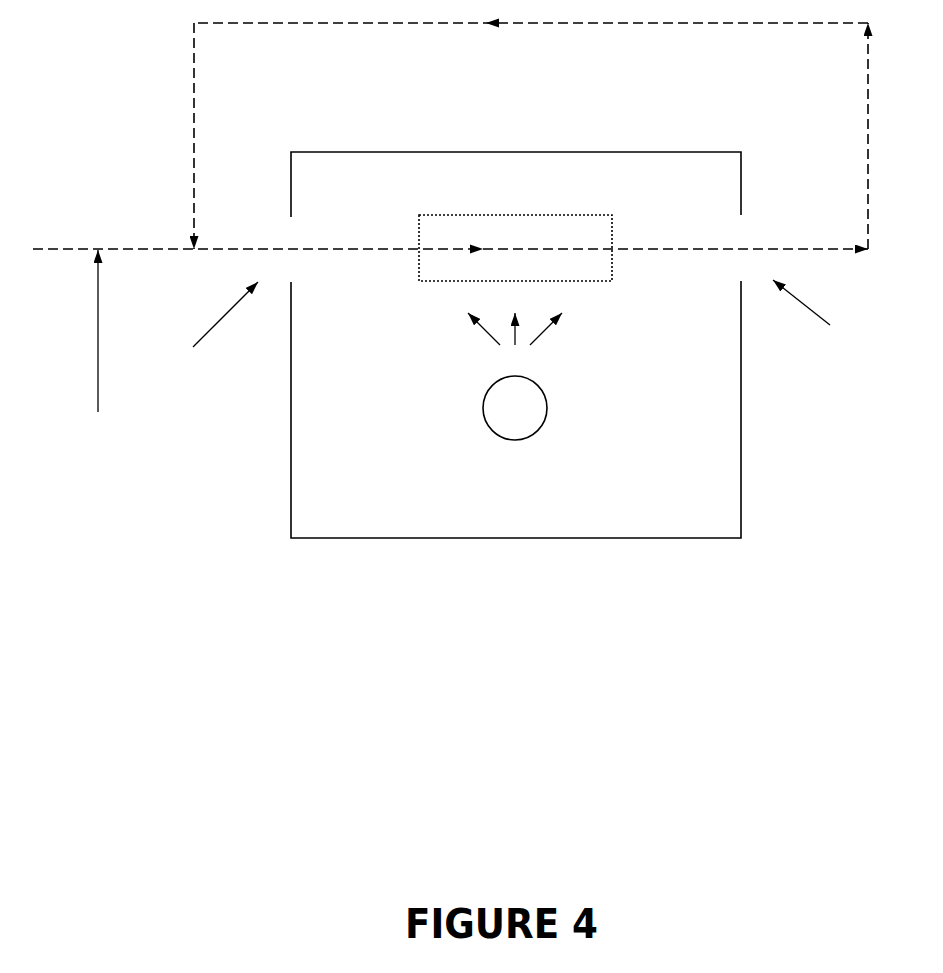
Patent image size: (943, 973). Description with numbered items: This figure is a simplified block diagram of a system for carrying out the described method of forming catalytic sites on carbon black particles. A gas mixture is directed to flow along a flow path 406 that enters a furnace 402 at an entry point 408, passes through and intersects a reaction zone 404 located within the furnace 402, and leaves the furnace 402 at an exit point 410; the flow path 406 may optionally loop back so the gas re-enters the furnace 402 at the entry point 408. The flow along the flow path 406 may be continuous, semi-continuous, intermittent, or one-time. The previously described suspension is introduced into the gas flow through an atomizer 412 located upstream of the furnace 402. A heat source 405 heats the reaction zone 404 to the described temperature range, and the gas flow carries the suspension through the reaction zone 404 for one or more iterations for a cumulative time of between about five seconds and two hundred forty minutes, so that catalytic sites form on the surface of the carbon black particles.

The furnace 402 is at (709, 473).
The reaction zone 404 is at (437, 262).
The heat source 405 is at (515, 408).
The flow path 406 is at (162, 248).
The entry point 408 is at (205, 328).
The exit point 410 is at (826, 326).
The atomizer 412 is at (115, 379).